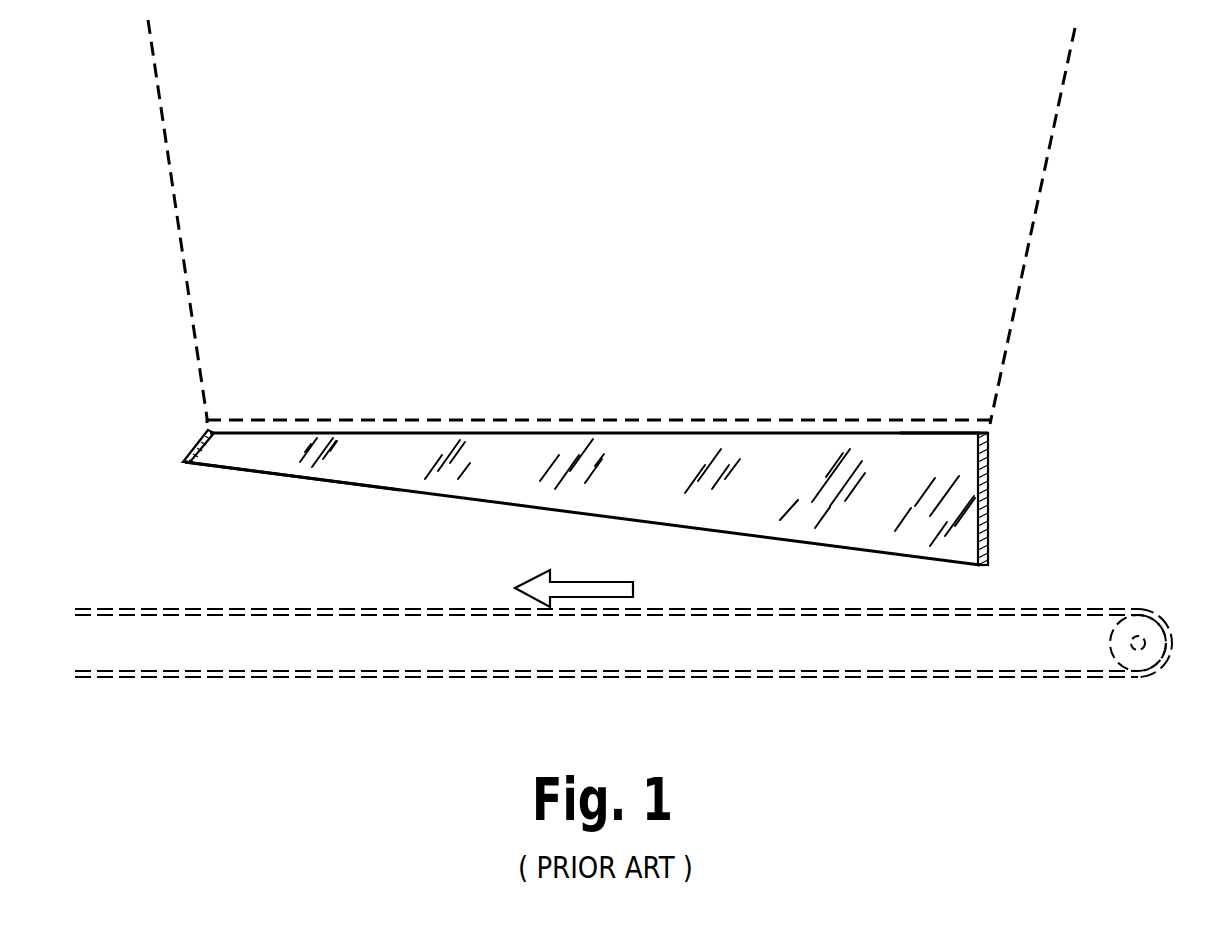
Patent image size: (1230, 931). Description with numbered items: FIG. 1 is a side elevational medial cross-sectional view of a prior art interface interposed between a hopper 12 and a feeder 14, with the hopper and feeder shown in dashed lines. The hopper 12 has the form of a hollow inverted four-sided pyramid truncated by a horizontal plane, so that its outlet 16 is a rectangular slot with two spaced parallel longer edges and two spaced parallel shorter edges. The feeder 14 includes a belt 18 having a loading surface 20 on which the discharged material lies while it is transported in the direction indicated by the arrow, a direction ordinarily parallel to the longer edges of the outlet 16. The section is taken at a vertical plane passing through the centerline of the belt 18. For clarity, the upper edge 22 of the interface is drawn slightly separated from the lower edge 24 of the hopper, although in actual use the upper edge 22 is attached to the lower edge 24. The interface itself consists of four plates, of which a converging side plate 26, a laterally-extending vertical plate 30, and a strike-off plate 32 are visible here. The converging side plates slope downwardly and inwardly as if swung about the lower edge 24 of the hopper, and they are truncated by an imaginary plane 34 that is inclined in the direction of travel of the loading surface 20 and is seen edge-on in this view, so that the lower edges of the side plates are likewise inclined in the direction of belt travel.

The hopper 12 is at (884, 150).
The feeder 14 is at (904, 683).
The outlet 16 is at (778, 421).
The belt 18 is at (337, 675).
The loading surface 20 is at (990, 610).
The upper edge of the interface 22 is at (895, 432).
The lower edge of the hopper 24 is at (475, 421).
The converging side plate 26 is at (890, 488).
The laterally-extending vertical plate 30 is at (988, 521).
The strike-off plate 32 is at (200, 438).
The imaginary plane 34 is at (268, 475).